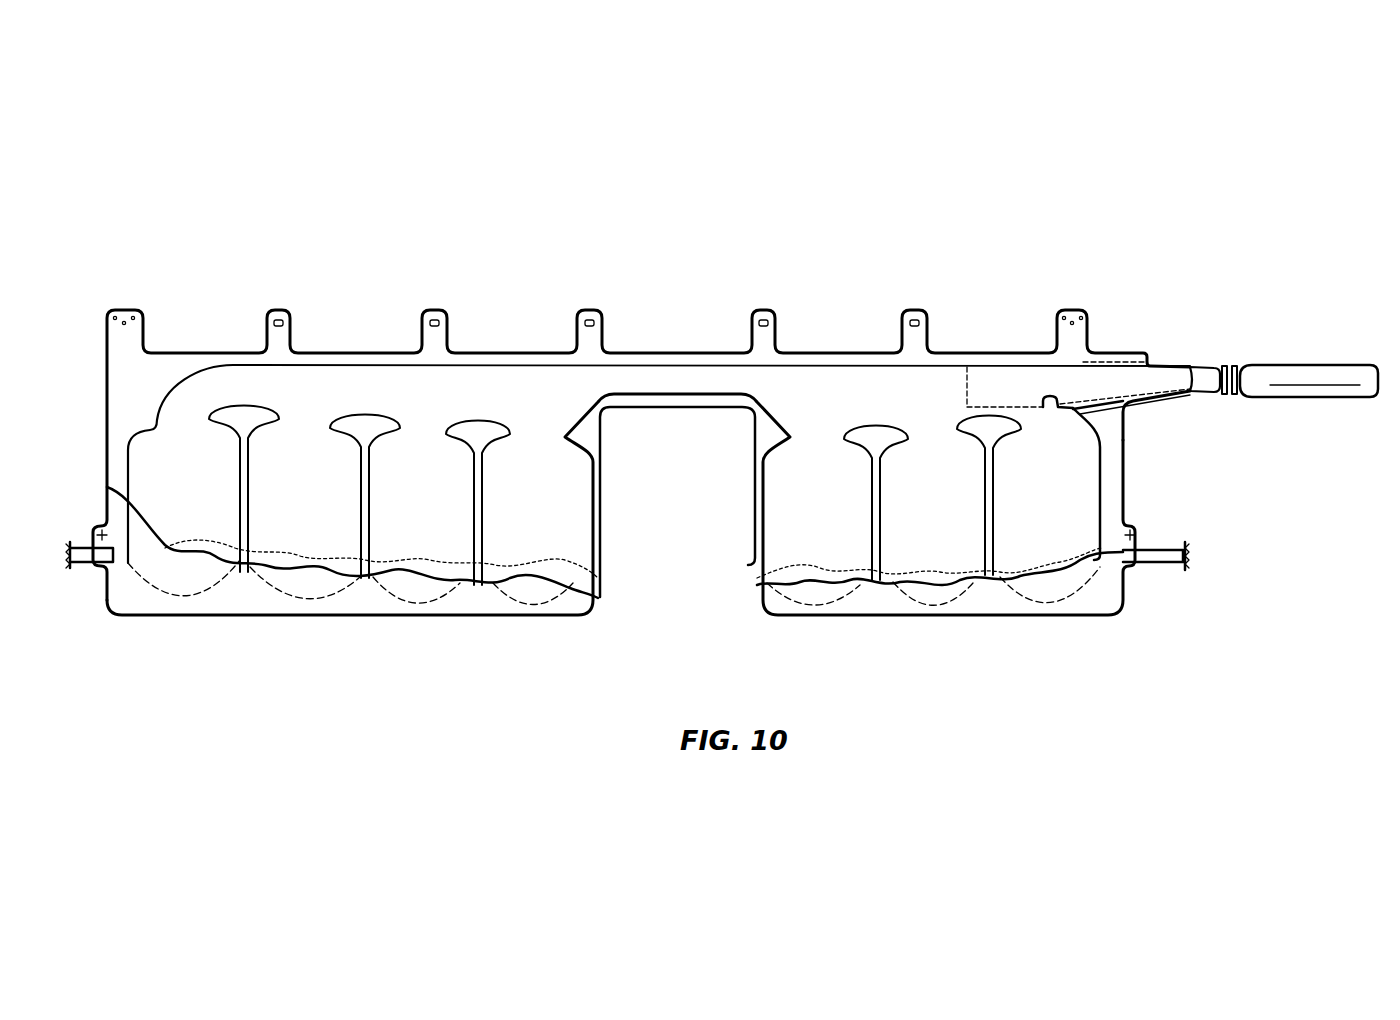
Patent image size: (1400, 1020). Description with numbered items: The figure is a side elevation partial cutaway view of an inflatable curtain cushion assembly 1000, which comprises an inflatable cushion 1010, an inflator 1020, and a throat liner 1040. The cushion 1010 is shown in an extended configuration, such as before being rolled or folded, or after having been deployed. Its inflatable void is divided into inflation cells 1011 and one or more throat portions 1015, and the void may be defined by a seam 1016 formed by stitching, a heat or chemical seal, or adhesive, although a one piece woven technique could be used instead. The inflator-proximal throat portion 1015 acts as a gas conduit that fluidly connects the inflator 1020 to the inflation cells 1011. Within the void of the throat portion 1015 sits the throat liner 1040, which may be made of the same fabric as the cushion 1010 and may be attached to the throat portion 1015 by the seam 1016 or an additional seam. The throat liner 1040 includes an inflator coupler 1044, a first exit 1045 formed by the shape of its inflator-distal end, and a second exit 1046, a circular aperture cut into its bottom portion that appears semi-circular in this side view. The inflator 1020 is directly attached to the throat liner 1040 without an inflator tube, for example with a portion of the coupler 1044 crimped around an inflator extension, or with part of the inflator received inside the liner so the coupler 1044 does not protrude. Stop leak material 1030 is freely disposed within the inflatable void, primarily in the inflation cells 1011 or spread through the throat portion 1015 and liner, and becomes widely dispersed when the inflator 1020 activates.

The inflatable curtain cushion assembly 1000 is at (830, 222).
The inflatable cushion 1010 is at (128, 370).
The inflation cells 1011 is at (423, 450).
The throat portion 1015 is at (1130, 410).
The seam 1016 is at (300, 597).
The inflator 1020 is at (1300, 372).
The stop leak material 1030 is at (420, 577).
The throat liner 1040 is at (1149, 357).
The inflator coupler 1044 is at (1229, 364).
The first exit 1045 is at (967, 385).
The second exit 1046 is at (1050, 403).